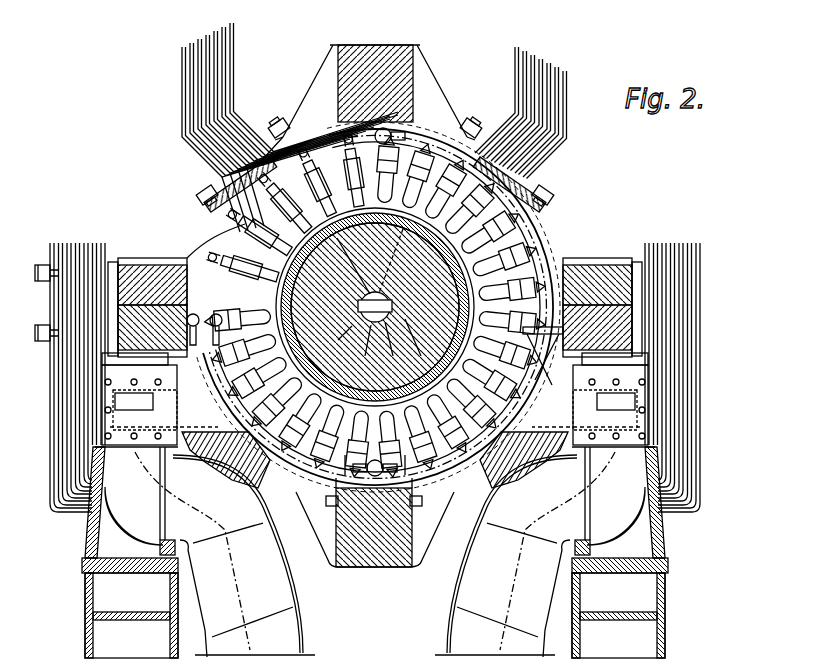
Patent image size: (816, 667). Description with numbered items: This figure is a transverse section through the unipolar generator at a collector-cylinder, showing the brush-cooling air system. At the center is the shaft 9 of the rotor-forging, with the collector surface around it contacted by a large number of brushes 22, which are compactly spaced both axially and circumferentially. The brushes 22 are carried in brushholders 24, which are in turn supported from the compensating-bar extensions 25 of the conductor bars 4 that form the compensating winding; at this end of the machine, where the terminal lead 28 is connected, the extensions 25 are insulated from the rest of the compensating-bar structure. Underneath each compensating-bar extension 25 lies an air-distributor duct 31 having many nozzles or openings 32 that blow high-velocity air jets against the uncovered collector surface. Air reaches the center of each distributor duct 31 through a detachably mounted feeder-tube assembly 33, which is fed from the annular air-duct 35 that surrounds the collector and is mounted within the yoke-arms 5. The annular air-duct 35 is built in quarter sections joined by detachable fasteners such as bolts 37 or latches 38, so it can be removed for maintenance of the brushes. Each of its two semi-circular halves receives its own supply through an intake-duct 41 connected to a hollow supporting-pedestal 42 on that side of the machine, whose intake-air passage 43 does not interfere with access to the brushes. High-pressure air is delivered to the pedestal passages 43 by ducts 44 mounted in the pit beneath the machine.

The conductor bars 4 is at (262, 205).
The yoke-arms 5 is at (402, 45).
The shaft 9 is at (366, 254).
The brushes 22 is at (338, 266).
The brushholders 24 is at (355, 261).
The compensating-bar extensions 25 is at (337, 338).
The terminal lead 28 is at (182, 83).
The air-distributor ducts 31 is at (365, 348).
The nozzles or openings 32 is at (394, 346).
The feeder-tube assembly 33 is at (418, 345).
The annular air-ducts 35 is at (437, 137).
The bolts 37 is at (533, 326).
The latches 38 is at (374, 130).
The intake-duct 41 is at (197, 426).
The supporting-pedestal 42 is at (85, 594).
The intake-air passage 43 is at (130, 496).
The ducts 44 is at (274, 644).